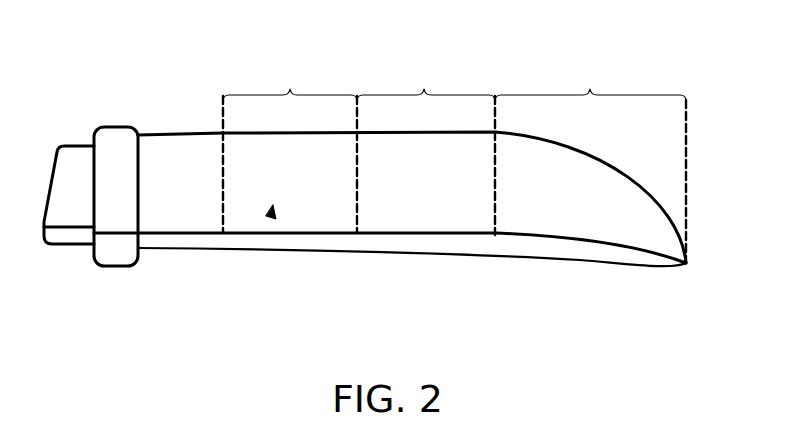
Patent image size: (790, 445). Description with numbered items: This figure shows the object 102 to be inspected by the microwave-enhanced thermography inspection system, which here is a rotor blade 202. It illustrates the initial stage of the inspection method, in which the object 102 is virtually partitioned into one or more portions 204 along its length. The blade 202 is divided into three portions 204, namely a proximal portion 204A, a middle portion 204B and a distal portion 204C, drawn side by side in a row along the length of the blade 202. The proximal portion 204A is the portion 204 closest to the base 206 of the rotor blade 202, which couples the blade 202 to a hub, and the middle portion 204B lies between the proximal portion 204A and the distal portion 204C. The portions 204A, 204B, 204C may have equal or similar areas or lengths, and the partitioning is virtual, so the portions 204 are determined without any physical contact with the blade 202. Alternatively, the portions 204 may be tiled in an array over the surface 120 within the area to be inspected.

The object 102 is at (162, 133).
The surface 120 is at (458, 198).
The rotor blade 202 is at (403, 240).
The portions 204 is at (270, 215).
The proximal portion 204A is at (290, 89).
The middle portion 204B is at (424, 89).
The distal portion 204C is at (590, 89).
The base 206 is at (107, 199).